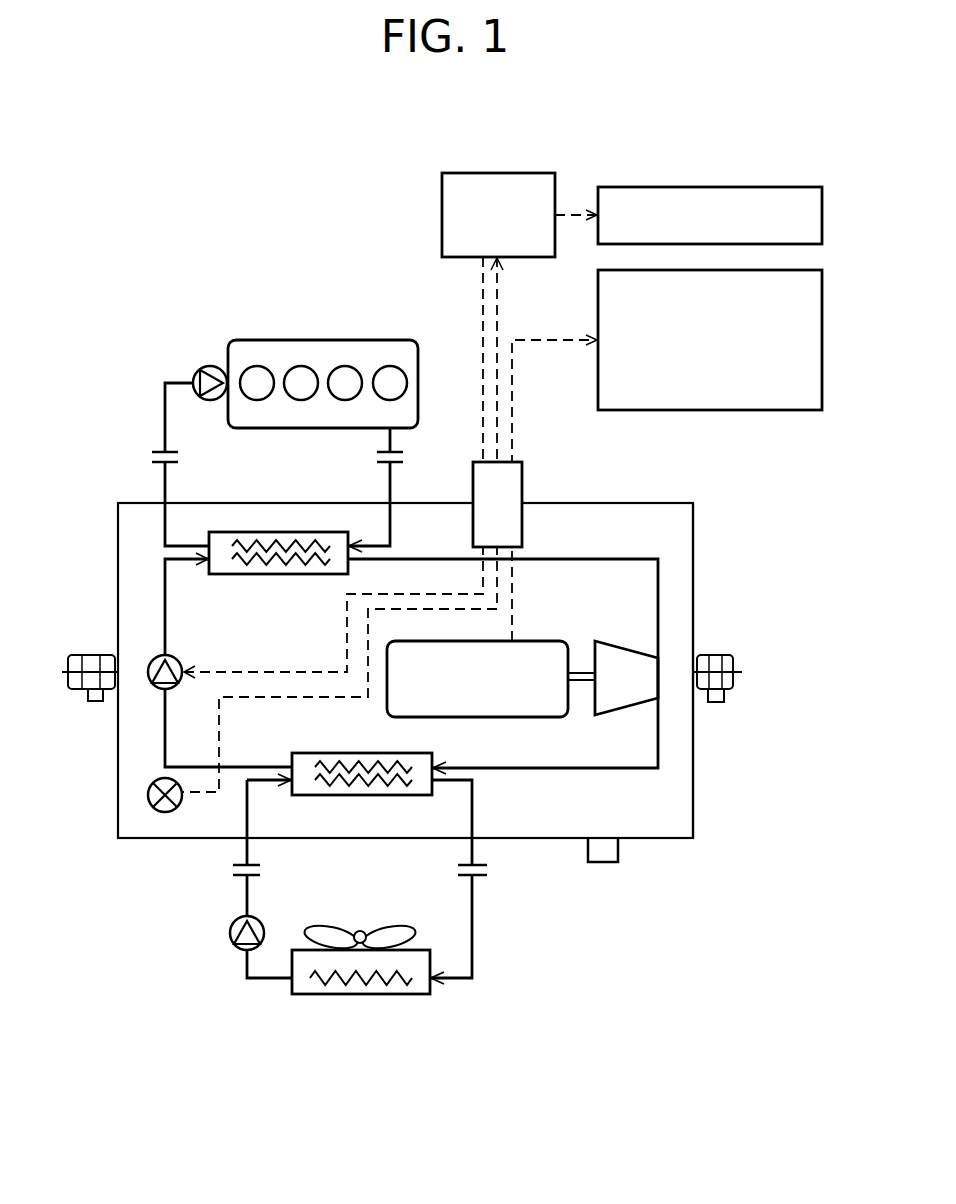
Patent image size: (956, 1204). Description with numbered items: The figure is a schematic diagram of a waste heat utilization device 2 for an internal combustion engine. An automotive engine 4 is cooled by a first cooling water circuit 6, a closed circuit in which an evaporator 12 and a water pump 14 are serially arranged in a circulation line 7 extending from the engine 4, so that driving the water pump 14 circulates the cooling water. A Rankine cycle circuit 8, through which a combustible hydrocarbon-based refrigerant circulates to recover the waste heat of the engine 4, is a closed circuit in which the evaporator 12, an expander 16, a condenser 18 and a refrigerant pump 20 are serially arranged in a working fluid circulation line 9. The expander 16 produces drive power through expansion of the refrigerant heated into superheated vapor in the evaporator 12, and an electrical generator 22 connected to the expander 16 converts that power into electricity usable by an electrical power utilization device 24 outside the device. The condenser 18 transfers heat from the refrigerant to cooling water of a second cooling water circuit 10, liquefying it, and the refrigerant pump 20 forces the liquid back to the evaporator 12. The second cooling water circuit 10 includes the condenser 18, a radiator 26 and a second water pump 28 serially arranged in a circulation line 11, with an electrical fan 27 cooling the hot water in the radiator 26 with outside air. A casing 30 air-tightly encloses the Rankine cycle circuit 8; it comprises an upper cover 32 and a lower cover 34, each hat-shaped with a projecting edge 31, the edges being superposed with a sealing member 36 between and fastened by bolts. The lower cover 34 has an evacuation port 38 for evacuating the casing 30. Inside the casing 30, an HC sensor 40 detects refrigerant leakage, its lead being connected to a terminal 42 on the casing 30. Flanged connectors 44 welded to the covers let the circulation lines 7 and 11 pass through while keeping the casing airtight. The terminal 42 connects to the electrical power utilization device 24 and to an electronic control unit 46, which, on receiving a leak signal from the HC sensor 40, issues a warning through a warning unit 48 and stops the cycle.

The waste heat utilization device 2 is at (142, 315).
The automotive engine 4 is at (273, 340).
The first cooling water circuit 6 is at (160, 424).
The circulation line 7 is at (163, 404).
The Rankine cycle circuit 8 is at (160, 578).
The working fluid circulation line 9 is at (166, 717).
The second cooling water circuit 10 is at (478, 928).
The circulation line 11 is at (248, 898).
The evaporator 12 is at (320, 575).
The water pump 14 is at (208, 366).
The expander 16 is at (631, 686).
The condenser 18 is at (333, 753).
The refrigerant pump 20 is at (179, 658).
The electrical generator 22 is at (548, 641).
The electrical power utilization device 24 is at (787, 410).
The radiator 26 is at (390, 995).
The electrical fan 27 is at (390, 930).
The second water pump 28 is at (230, 929).
The casing 30 is at (696, 606).
The projecting edge 31 is at (70, 655).
The upper cover 32 is at (695, 569).
The lower cover 34 is at (695, 769).
The sealing member 36 is at (744, 669).
The evacuation port 38 is at (604, 866).
The HC sensor 40 is at (158, 779).
The terminal 42 is at (525, 478).
The flanged connectors 44 is at (143, 457).
The electronic control unit 46 is at (468, 173).
The warning unit 48 is at (788, 187).